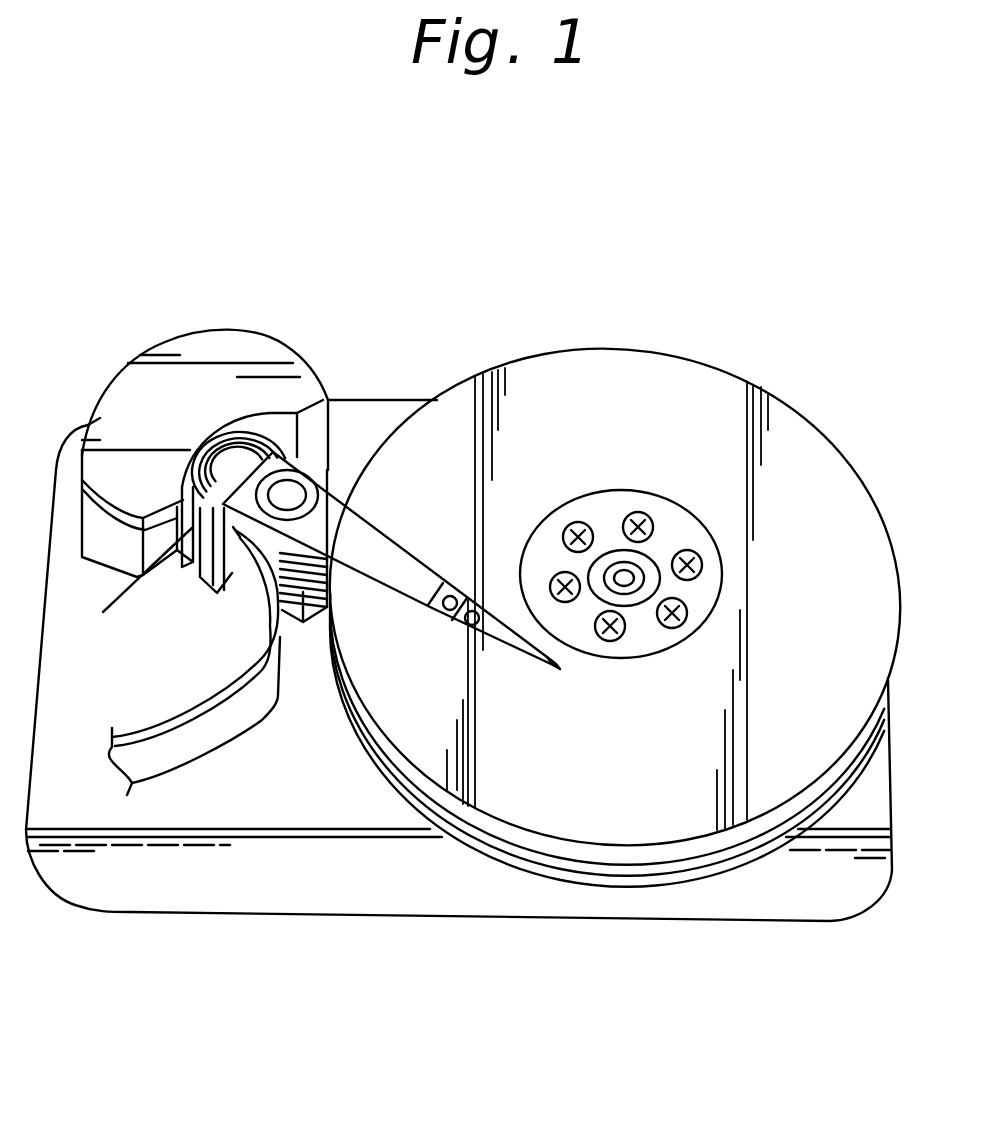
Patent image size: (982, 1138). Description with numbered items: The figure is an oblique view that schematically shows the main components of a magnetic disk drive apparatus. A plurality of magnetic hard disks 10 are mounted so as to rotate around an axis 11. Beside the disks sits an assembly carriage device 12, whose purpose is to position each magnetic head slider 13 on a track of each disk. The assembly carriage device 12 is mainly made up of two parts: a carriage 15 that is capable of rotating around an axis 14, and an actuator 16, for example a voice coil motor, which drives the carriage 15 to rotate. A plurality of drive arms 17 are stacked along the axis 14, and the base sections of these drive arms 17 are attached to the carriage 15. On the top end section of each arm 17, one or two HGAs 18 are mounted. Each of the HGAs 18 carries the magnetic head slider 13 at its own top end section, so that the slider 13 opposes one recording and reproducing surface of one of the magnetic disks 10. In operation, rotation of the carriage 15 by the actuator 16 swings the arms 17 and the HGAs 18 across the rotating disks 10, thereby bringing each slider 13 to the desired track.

The magnetic hard disks 10 is at (770, 391).
The axis 11 is at (637, 568).
The assembly carriage device 12 is at (335, 348).
The magnetic head slider 13 is at (558, 668).
The axis 14 is at (292, 498).
The carriage 15 is at (220, 586).
The actuator 16 is at (138, 492).
The drive arms 17 is at (360, 535).
The HGAs 18 is at (498, 638).